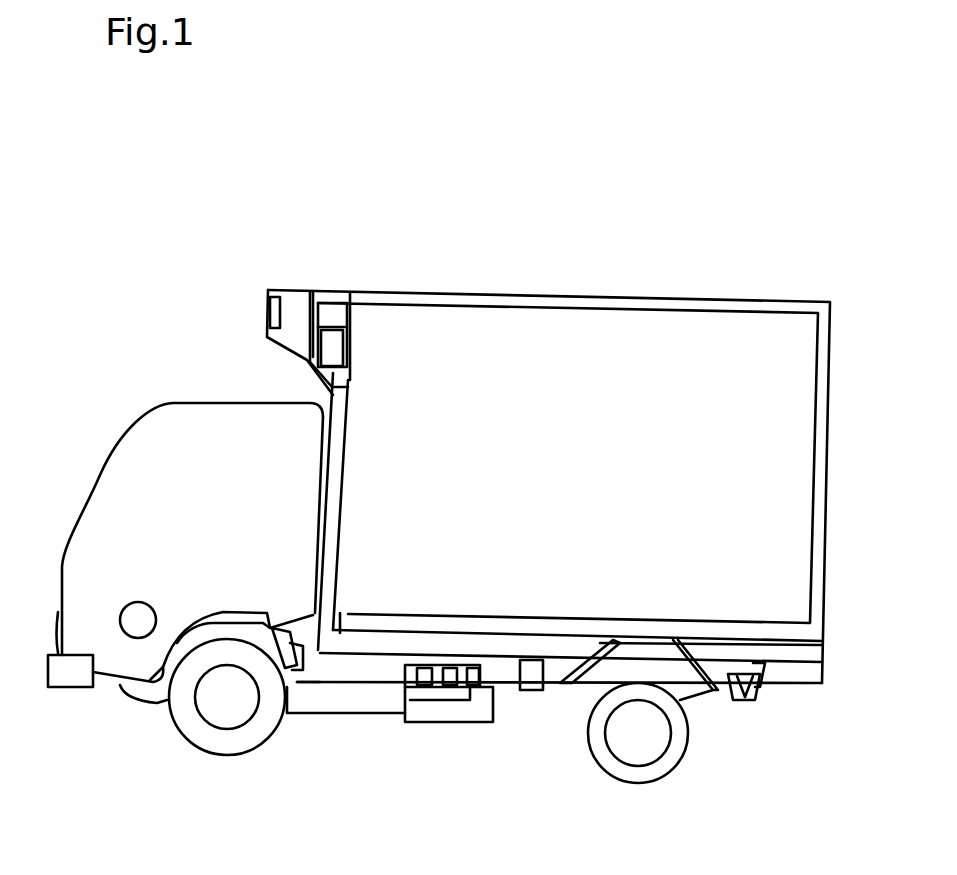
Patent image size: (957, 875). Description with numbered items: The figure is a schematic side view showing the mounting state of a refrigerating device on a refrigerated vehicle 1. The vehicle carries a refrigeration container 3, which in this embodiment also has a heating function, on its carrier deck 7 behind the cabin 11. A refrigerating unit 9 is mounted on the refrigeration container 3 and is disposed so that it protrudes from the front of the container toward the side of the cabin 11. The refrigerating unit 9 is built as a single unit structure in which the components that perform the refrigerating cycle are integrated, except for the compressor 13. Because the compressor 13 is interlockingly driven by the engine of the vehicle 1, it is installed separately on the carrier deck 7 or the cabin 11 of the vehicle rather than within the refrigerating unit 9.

The refrigerated vehicle 1 is at (643, 266).
The refrigeration container 3 is at (825, 487).
The carrier deck 7 is at (791, 650).
The refrigerating unit 9 is at (293, 290).
The cabin 11 is at (143, 437).
The compressor 13 is at (136, 618).